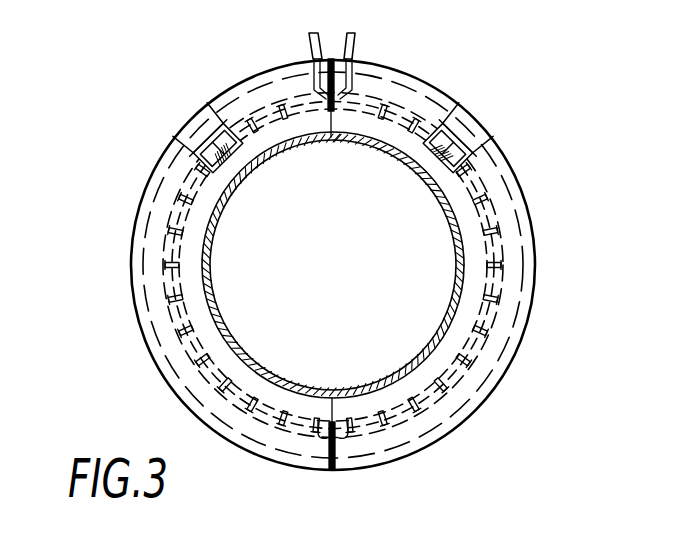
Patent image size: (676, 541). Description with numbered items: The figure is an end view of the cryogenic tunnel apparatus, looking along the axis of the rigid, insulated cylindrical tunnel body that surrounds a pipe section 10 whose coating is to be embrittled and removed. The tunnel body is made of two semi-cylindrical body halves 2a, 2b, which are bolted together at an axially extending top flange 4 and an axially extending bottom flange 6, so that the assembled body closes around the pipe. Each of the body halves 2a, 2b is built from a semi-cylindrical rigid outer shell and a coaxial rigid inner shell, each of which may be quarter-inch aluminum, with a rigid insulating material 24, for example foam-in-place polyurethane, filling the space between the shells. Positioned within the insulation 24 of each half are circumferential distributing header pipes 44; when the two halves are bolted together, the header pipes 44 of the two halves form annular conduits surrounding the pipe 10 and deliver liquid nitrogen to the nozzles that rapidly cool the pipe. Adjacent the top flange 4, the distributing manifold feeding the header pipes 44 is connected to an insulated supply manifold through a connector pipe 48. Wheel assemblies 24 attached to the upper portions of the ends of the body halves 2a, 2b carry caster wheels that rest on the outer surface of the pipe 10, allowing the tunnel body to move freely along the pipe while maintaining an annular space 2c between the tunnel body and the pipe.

The semi-cylindrical body half 2a is at (119, 309).
The semi-cylindrical body half 2b is at (509, 392).
The annular space 2c is at (225, 362).
The top flange 4 is at (331, 58).
The bottom flange 6 is at (340, 471).
The pipe section 10 is at (382, 383).
The rigid insulating material 24 is at (468, 168).
The circumferential distributing header pipe 44 is at (500, 253).
The connector pipe 48 is at (355, 36).